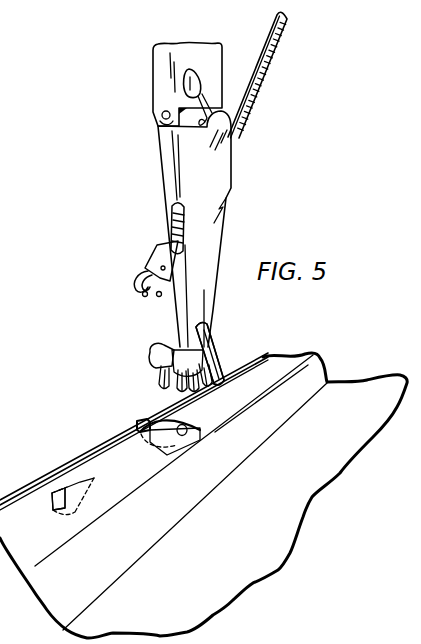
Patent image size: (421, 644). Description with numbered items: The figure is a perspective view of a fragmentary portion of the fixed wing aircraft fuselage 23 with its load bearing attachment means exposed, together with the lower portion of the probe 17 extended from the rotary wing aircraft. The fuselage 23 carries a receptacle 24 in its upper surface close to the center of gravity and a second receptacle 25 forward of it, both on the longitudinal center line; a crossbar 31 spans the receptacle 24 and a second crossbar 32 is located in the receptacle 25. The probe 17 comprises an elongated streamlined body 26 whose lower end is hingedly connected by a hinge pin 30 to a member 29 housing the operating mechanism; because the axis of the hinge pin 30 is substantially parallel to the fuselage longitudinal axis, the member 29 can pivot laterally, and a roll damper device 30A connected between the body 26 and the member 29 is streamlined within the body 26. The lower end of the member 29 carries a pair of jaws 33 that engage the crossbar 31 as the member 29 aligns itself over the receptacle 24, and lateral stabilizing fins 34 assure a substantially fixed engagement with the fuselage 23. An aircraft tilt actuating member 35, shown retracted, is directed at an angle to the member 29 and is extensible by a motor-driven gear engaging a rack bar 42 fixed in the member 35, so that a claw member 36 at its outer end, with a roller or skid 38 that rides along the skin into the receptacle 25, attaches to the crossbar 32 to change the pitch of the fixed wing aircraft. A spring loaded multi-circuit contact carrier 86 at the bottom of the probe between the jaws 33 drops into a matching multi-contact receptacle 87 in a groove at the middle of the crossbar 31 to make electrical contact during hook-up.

The probe 17 is at (138, 57).
The fixed wing aircraft fuselage 23 is at (310, 467).
The receptacle 24 is at (205, 432).
The second receptacle 25 is at (80, 485).
The body 26 is at (190, 30).
The member 29 is at (223, 220).
The hinge pin 30 is at (161, 117).
The roll damper device 30A is at (185, 92).
The crossbar 31 is at (150, 427).
The second crossbar 32 is at (55, 493).
The jaws 33 is at (160, 377).
The lateral stabilizing fins 34 is at (152, 347).
The aircraft tilt actuating member 35 is at (169, 238).
The claw member 36 is at (138, 285).
The roller or skid 38 is at (160, 297).
The rack bar 42 is at (270, 62).
The spring loaded multi-circuit contact carrier 86 is at (200, 355).
The multi-contact receptacle 87 is at (177, 434).